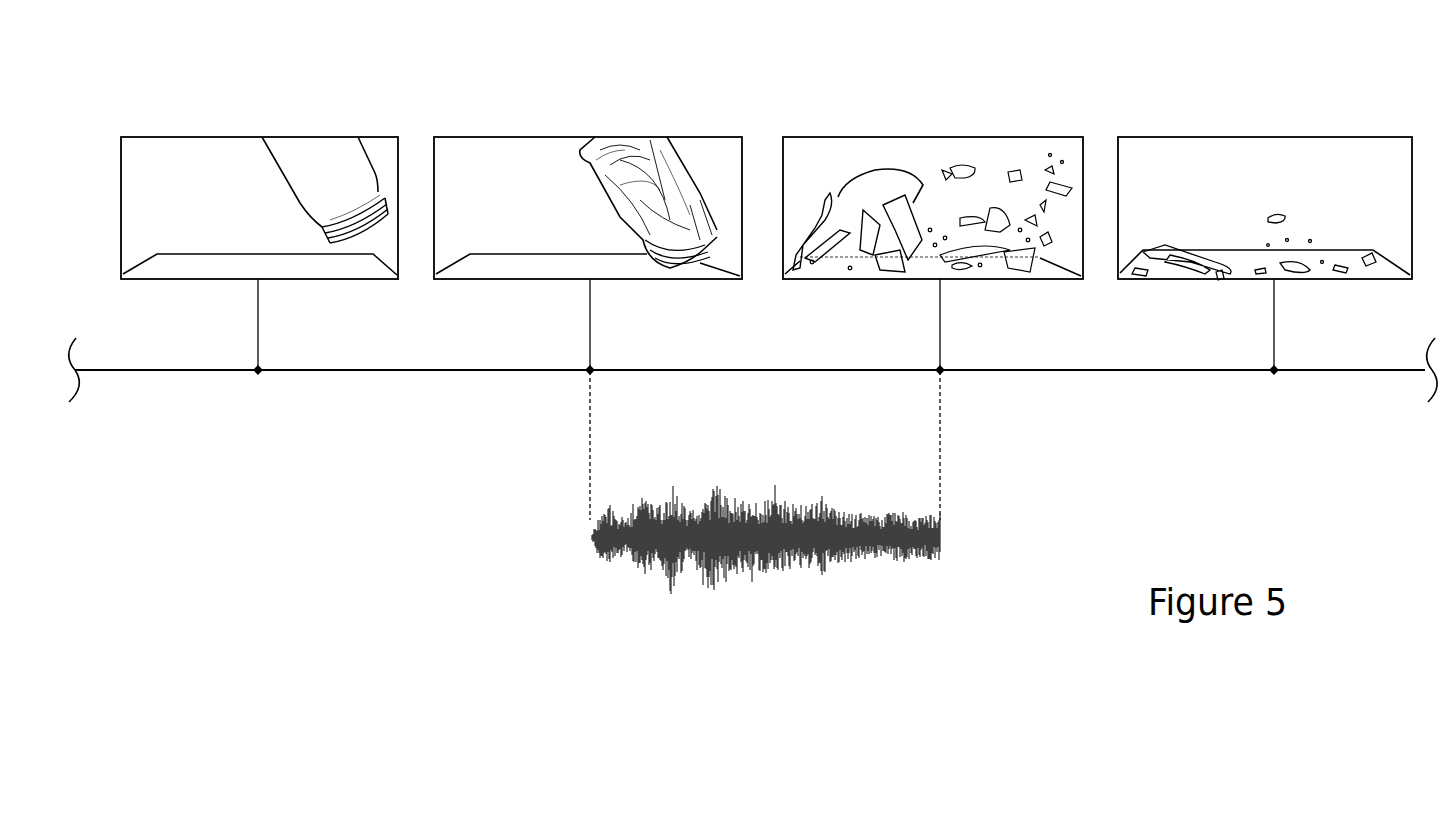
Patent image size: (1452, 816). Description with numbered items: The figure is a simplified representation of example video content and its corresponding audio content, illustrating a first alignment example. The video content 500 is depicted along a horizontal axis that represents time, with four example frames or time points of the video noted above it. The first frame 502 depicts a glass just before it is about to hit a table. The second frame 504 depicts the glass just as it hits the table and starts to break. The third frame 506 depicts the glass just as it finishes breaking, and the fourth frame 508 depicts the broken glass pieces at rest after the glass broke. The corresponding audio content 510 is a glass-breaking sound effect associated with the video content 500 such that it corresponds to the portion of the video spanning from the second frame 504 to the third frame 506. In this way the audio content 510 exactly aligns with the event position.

The video content 500 is at (112, 370).
The first frame 502 is at (304, 137).
The second frame 504 is at (668, 137).
The third frame 506 is at (990, 137).
The fourth frame 508 is at (1297, 137).
The audio content 510 is at (820, 512).